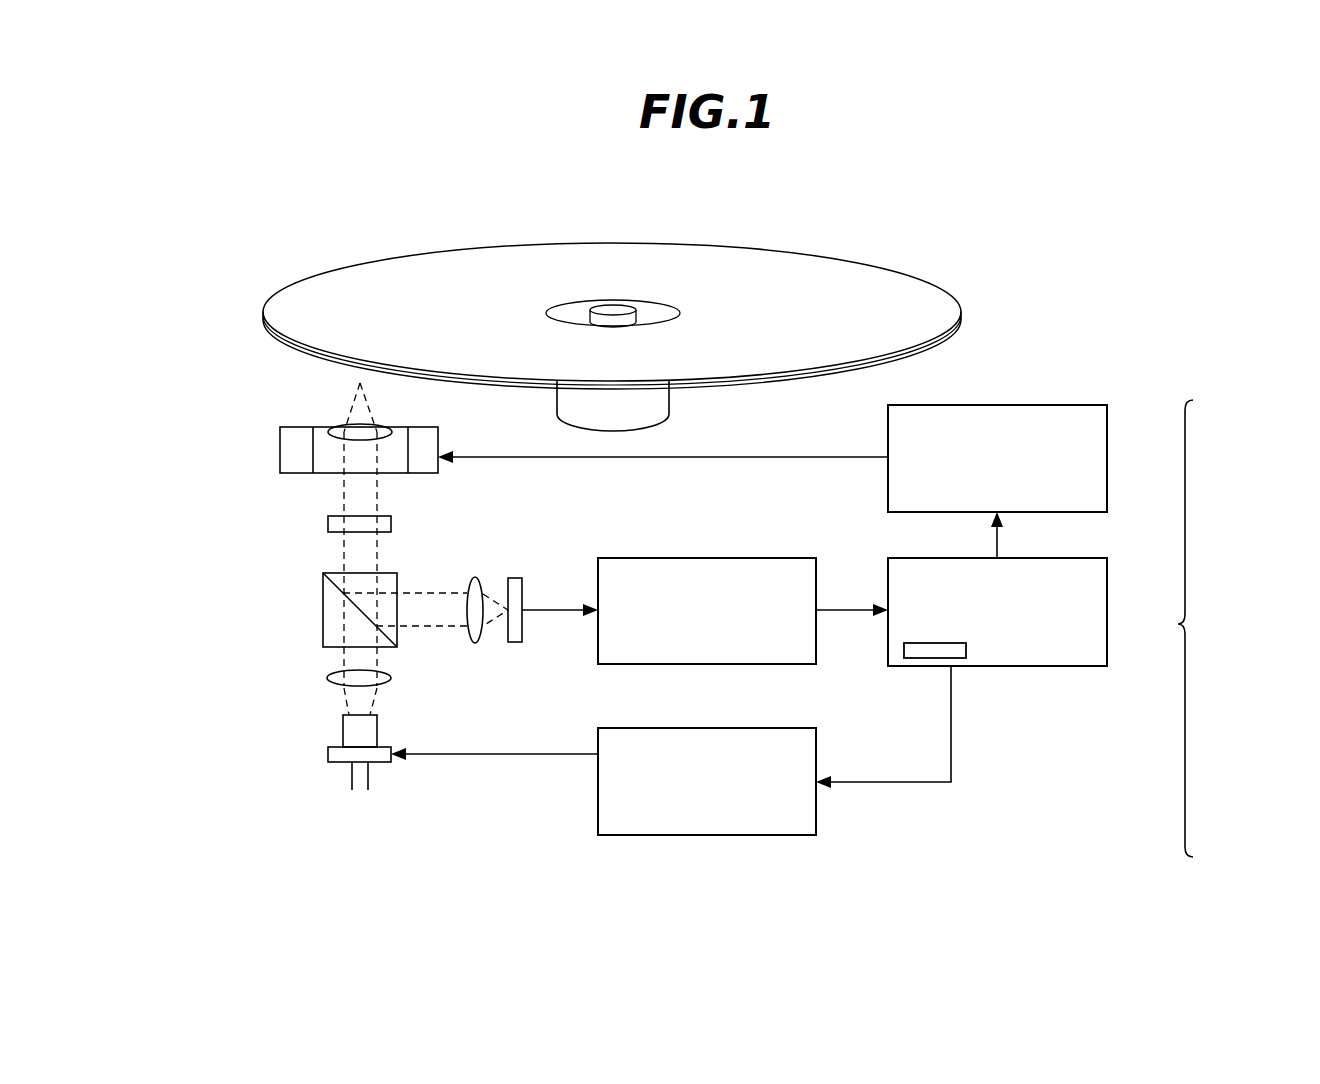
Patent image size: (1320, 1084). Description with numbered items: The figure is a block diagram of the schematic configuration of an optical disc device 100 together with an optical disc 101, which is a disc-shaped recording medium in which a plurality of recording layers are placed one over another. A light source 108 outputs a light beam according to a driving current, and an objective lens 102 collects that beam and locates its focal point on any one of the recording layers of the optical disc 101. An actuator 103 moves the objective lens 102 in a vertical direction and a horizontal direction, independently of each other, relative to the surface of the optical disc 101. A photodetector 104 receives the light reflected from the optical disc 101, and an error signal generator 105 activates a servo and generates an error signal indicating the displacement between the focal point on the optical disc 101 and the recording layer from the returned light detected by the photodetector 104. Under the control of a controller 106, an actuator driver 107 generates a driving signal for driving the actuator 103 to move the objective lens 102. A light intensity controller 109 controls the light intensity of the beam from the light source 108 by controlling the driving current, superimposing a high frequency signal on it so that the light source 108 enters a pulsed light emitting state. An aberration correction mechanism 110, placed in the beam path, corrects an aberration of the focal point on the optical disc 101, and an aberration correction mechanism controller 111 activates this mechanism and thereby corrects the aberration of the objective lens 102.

The optical disc device 100 is at (1212, 628).
The optical disc 101 is at (312, 293).
The objective lens 102 is at (340, 428).
The actuator 103 is at (280, 450).
The photodetector 104 is at (516, 578).
The error signal generator 105 is at (738, 558).
The controller 106 is at (1025, 611).
The actuator driver 107 is at (1047, 405).
The light source 108 is at (340, 763).
The light intensity controller 109 is at (718, 835).
The aberration correction mechanism 110 is at (392, 524).
The aberration correction mechanism controller 111 is at (923, 658).